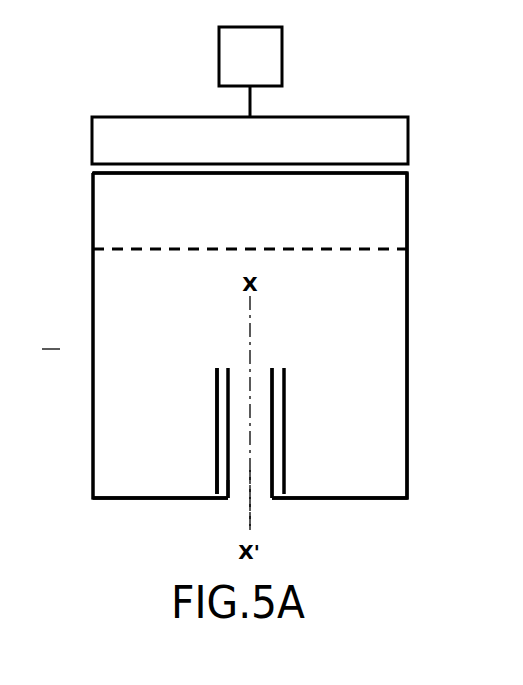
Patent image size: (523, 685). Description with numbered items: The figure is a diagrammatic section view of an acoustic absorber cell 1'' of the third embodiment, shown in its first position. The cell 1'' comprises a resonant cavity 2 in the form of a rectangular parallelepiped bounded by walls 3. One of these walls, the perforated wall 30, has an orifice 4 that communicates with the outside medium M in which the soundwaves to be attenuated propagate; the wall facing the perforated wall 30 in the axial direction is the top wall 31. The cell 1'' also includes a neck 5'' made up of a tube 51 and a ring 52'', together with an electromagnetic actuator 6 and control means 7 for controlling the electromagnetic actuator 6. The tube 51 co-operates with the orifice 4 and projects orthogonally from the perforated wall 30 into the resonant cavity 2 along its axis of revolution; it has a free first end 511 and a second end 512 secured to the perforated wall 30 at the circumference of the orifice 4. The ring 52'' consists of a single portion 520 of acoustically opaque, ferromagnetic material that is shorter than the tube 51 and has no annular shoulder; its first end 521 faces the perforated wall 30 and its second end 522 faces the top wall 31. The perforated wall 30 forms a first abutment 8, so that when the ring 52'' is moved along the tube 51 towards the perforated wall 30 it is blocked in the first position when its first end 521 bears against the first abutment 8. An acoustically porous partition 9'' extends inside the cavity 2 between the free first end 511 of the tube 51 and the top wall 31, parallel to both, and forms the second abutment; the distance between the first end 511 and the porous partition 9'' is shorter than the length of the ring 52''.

The acoustic absorber cell 1'' is at (225, 264).
The control means 7 is at (243, 69).
The electromagnetic actuator 6 is at (243, 155).
The resonant cavity 2 is at (389, 232).
The wall 3 is at (113, 175).
The top wall 31 is at (378, 175).
The perforated wall 30 is at (140, 499).
The acoustically porous partition 9'' is at (250, 226).
The outside medium M is at (52, 336).
The neck 5'' is at (293, 429).
The tube 51 is at (272, 430).
The first end of the tube 511 is at (273, 366).
The second end of the tube 512 is at (228, 509).
The ring 52'' is at (189, 433).
The single portion of material 520 is at (215, 437).
The first end of the ring 521 is at (203, 492).
The second end of the ring 522 is at (215, 367).
The orifice 4 is at (263, 497).
The first abutment 8 is at (340, 497).